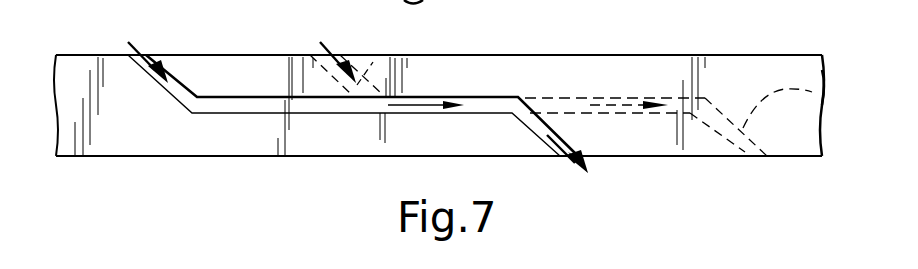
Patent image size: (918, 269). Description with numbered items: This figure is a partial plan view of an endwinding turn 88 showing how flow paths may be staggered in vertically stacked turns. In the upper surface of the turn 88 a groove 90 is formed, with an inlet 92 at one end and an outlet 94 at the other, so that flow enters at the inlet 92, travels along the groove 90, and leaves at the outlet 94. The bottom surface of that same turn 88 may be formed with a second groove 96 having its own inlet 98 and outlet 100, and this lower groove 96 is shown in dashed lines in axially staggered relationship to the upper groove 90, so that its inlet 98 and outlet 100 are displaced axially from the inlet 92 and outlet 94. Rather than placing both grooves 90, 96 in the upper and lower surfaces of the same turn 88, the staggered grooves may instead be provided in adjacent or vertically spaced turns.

The turn 88 is at (207, 137).
The groove 90 is at (335, 104).
The inlet 92 is at (183, 93).
The outlet 94 is at (538, 127).
The groove 96 is at (575, 110).
The inlet 98 is at (372, 65).
The outlet 100 is at (823, 97).